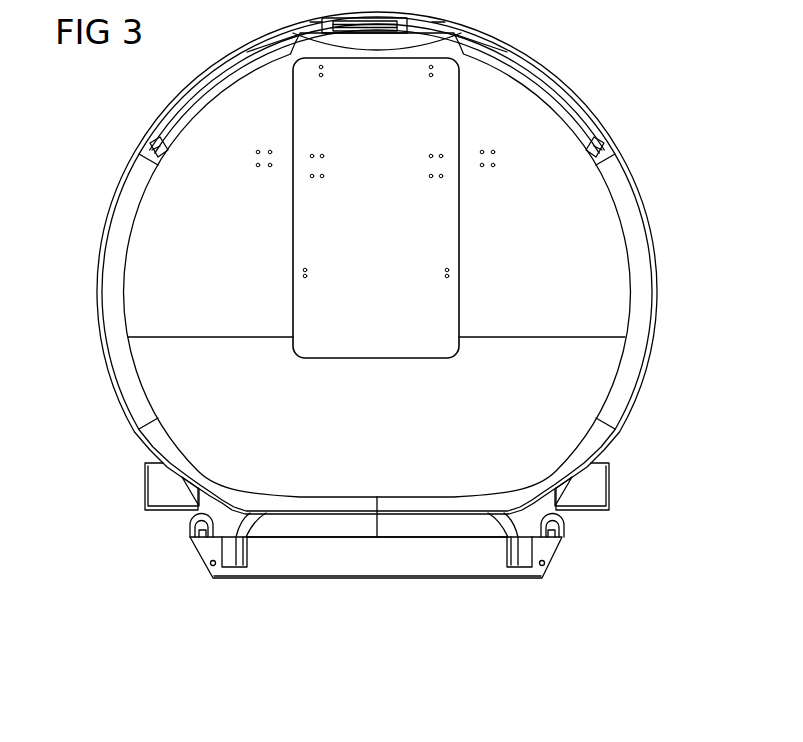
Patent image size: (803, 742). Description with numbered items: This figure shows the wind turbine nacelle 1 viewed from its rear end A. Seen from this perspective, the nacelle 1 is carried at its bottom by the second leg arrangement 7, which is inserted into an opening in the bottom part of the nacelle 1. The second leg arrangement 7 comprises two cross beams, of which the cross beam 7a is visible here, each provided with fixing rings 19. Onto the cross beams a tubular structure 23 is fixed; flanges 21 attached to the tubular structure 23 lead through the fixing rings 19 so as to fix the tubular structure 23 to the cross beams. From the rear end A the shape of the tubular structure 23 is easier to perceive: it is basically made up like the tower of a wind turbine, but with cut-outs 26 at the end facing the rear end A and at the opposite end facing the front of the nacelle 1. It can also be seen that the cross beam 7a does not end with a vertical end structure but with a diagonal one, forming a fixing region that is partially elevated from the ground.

The wind turbine nacelle 1 is at (634, 86).
The rear end A is at (411, 263).
The second leg arrangement 7 is at (368, 559).
The cross beam 7a is at (408, 573).
The fixing ring 19 is at (188, 526).
The flange 21 is at (206, 533).
The tubular structure 23 is at (537, 513).
The cut-out 26 is at (323, 540).